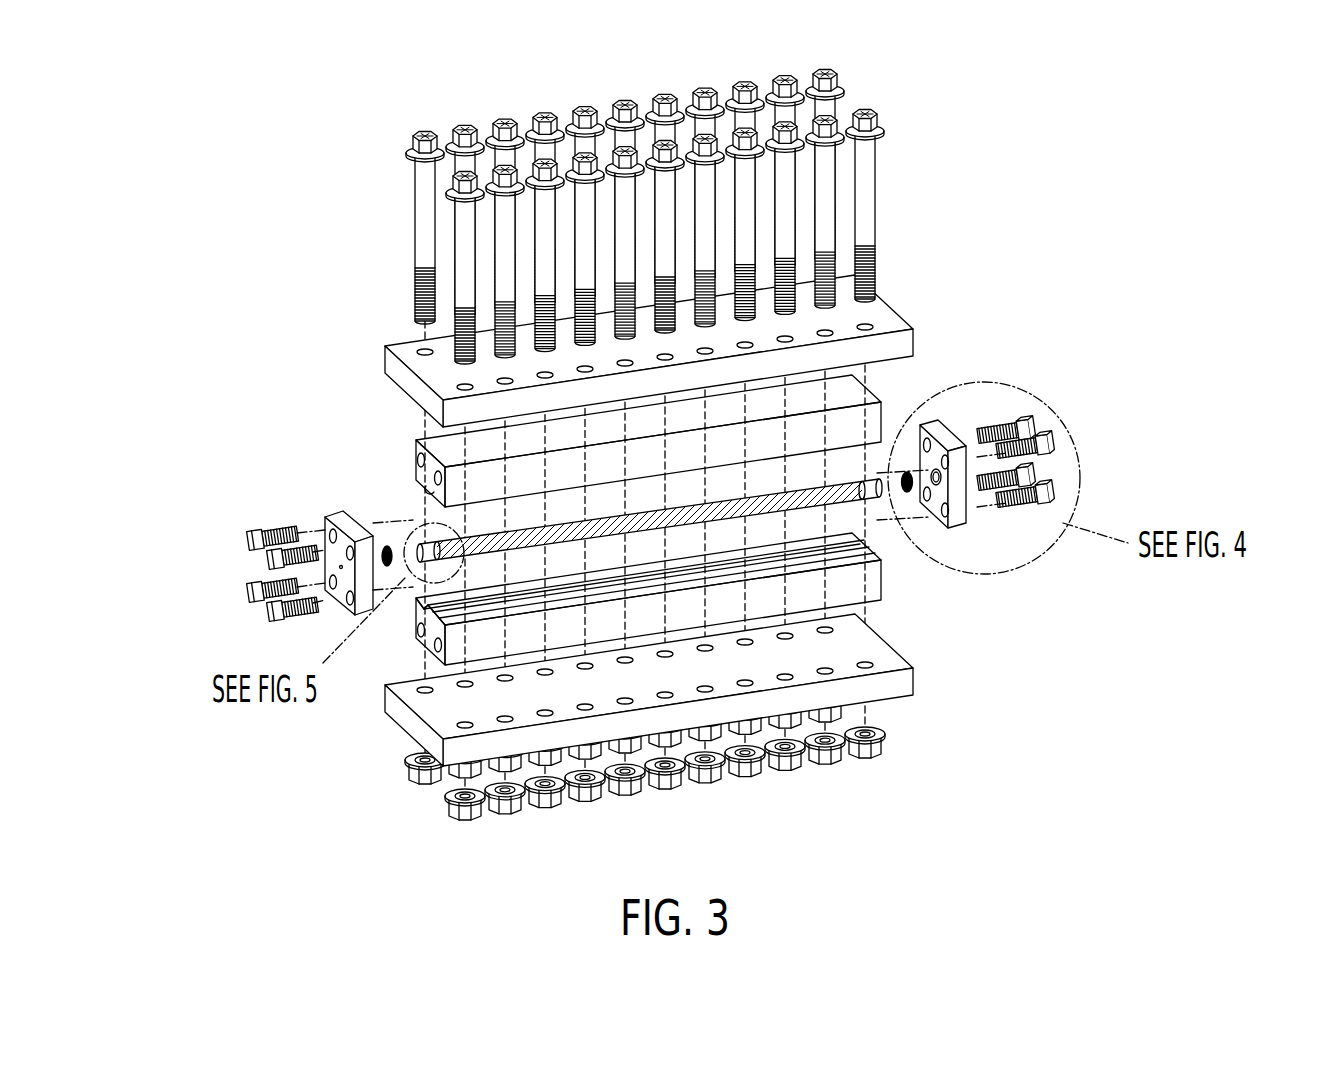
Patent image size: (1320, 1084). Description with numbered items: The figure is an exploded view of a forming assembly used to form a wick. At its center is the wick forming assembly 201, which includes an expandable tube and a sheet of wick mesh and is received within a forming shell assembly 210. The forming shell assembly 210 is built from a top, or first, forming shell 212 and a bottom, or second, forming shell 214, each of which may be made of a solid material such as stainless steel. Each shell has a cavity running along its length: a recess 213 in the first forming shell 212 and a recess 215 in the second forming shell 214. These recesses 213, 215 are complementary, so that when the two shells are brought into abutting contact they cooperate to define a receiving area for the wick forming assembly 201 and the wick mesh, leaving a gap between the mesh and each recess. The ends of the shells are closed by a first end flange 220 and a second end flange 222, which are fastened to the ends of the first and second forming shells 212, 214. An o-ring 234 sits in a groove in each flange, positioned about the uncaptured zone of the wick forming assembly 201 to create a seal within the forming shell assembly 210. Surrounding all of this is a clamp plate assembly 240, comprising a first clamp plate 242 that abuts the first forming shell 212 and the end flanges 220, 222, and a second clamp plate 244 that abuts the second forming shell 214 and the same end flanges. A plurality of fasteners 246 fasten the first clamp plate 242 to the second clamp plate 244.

The wick forming assembly 201 is at (397, 505).
The forming shell assembly 210 is at (395, 438).
The first forming shell 212 is at (885, 400).
The recess 213 is at (430, 490).
The second forming shell 214 is at (270, 612).
The recess 215 is at (425, 612).
The first end flange 220 is at (320, 518).
The second end flange 222 is at (948, 428).
The o-ring 234 is at (385, 548).
The clamp plate assembly 240 is at (920, 270).
The first clamp plate 242 is at (383, 346).
The second clamp plate 244 is at (395, 723).
The fasteners 246 is at (925, 135).